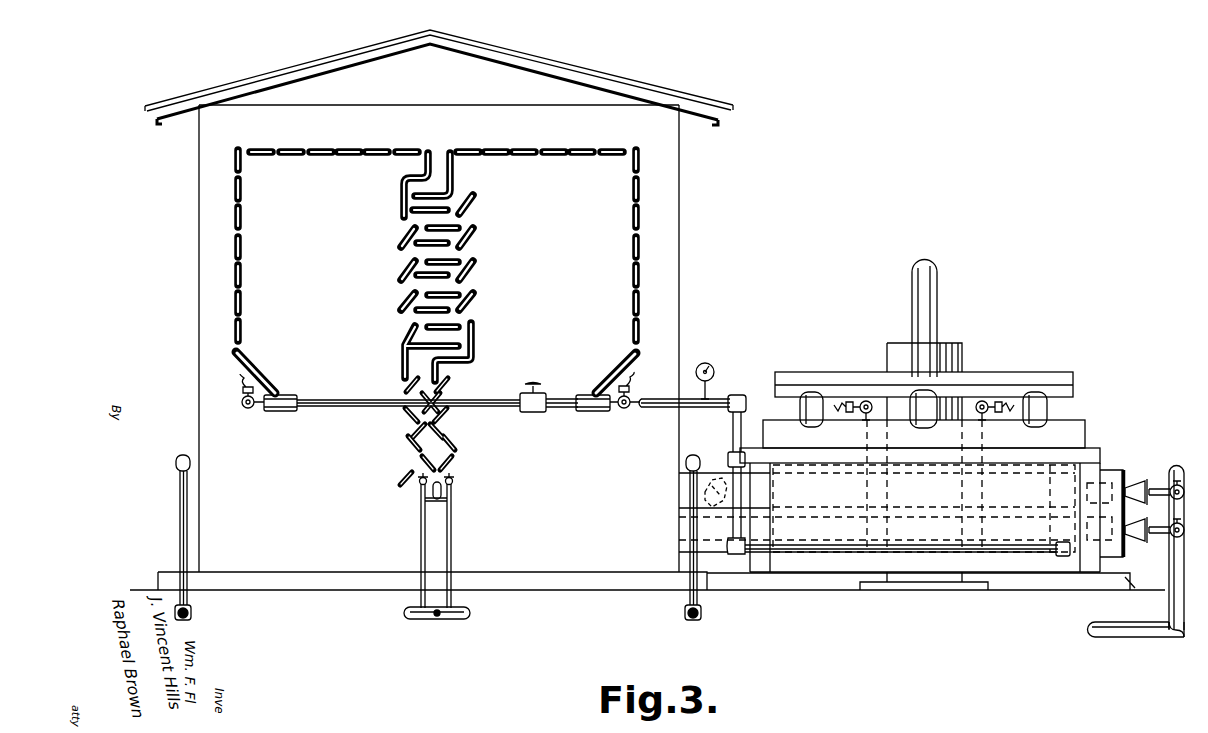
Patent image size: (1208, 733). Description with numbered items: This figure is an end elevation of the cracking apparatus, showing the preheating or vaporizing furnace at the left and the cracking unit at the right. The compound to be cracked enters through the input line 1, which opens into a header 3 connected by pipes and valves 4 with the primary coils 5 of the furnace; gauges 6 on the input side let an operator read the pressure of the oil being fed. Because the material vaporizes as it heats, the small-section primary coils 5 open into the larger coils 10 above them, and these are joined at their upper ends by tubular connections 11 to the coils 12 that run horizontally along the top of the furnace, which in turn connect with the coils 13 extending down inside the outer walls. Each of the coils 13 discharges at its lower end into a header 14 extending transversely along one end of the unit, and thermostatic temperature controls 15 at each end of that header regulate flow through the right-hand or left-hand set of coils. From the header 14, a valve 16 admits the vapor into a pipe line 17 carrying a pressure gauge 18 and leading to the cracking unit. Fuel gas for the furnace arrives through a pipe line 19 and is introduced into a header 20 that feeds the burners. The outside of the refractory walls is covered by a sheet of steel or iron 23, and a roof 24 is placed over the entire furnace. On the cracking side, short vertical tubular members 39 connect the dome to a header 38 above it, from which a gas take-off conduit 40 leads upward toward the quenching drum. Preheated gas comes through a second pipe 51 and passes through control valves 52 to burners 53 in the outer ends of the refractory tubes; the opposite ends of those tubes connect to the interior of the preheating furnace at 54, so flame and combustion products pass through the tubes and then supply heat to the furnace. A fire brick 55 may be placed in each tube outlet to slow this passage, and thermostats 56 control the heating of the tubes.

The input line 1 is at (437, 617).
The header 3 is at (458, 617).
The pipes and valves 4 is at (419, 481).
The primary coils 5 is at (454, 463).
The gauges 6 is at (443, 492).
The coils 10 is at (473, 272).
The tubular connections 11 is at (428, 150).
The coils 12 is at (347, 158).
The coils 13 is at (244, 278).
The header 14 is at (353, 407).
The thermostatic temperature controls 15 is at (249, 409).
The valve 16 is at (541, 390).
The pipe line 17 is at (561, 410).
The pressure gauge 18 is at (713, 371).
The pipe line 19 is at (190, 616).
The header 20 is at (183, 455).
The sheet of steel or iron 23 is at (681, 251).
The roof 24 is at (583, 70).
The header 38 is at (1002, 378).
The short tubular members 39 is at (927, 401).
The gas take-off conduit 40 is at (930, 300).
The second pipe 51 is at (1125, 633).
The control valves 52 is at (1182, 485).
The burners 53 is at (1140, 480).
The connection to preheating furnace 54 is at (714, 540).
The fire brick 55 is at (720, 470).
The thermostats 56 is at (866, 401).